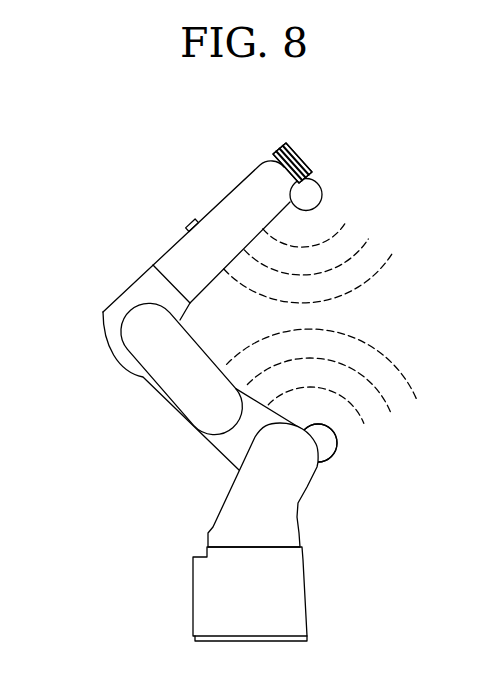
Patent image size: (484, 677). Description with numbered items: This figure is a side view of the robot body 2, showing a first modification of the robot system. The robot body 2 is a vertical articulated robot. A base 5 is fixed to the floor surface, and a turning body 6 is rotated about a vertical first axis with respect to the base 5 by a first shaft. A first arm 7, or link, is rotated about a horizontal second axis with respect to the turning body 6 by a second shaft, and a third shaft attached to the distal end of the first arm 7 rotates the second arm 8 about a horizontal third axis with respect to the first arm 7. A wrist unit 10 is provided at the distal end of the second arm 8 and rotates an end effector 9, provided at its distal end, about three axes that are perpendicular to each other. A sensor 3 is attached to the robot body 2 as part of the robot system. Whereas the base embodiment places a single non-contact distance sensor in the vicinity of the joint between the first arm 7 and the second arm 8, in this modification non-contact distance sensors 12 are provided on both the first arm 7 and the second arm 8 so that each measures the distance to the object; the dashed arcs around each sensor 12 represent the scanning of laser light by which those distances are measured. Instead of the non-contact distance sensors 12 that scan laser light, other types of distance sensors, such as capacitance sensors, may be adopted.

The robot body 2 is at (112, 267).
The sensor 3 is at (357, 436).
The base 5 is at (306, 588).
The turning body 6 is at (311, 484).
The first arm 7 is at (157, 384).
The second arm 8 is at (236, 185).
The end effector 9 is at (291, 142).
The wrist unit 10 is at (332, 156).
The non-contact distance sensor 12 is at (322, 191).